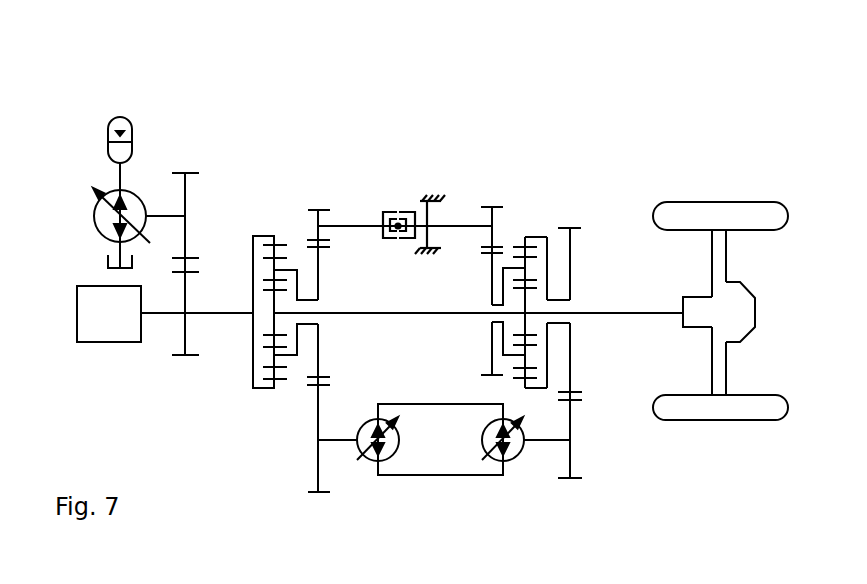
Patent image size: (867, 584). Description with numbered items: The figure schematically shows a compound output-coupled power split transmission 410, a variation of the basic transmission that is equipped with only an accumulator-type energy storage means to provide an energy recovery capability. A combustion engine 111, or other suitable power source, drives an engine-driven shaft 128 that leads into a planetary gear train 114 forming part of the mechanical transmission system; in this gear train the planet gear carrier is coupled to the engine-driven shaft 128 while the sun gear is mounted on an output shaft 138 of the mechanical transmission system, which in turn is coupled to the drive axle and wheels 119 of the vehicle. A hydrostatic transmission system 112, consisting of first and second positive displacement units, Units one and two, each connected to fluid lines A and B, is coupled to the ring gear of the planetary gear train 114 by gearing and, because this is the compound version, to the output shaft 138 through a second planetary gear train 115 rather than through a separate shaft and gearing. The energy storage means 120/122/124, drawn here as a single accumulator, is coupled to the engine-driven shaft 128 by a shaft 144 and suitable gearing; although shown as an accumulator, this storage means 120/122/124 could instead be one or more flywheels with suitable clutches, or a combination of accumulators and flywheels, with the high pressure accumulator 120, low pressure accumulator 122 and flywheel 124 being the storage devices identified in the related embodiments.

The compound PSD transmission 410 is at (527, 79).
The high pressure accumulator 120 is at (213, 103).
The low pressure accumulator 122 is at (139, 228).
The flywheel 124 is at (120, 153).
The shaft 144 is at (167, 215).
The combustion engine 111 is at (83, 337).
The engine-driven shaft 128 is at (168, 313).
The planetary gear train 114 is at (246, 410).
The output shaft 138 is at (433, 310).
The second planetary gear train 115 is at (544, 202).
The hydrostatic transmission system 112 is at (421, 533).
The drive axle and wheels 119 is at (787, 310).